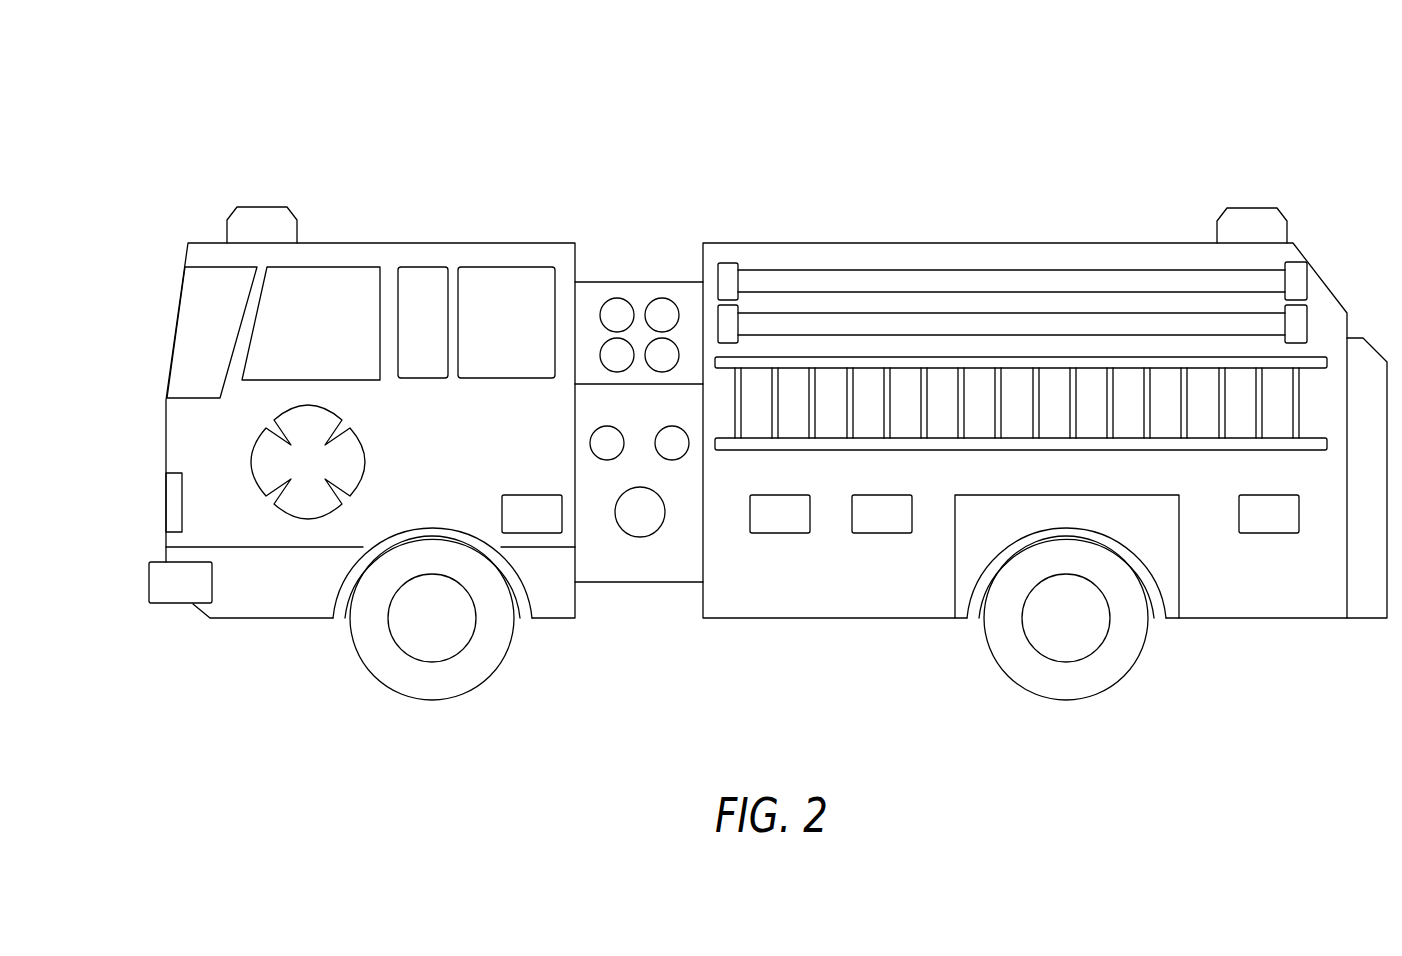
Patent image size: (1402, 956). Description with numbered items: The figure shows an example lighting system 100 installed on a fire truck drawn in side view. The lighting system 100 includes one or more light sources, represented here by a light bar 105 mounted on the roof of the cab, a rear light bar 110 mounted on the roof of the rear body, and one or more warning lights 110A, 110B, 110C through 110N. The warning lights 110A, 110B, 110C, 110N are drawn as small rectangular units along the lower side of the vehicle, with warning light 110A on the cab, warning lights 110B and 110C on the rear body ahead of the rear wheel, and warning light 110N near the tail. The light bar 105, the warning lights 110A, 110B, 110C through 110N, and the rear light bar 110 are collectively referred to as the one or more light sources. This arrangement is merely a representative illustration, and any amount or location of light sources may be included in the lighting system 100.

The lighting system 100 is at (372, 128).
The light bar 105 is at (257, 220).
The rear light bar 110 is at (1255, 218).
The warning light 110A is at (532, 533).
The warning light 110B is at (779, 533).
The warning light 110C is at (887, 533).
The warning light 110N is at (1270, 533).